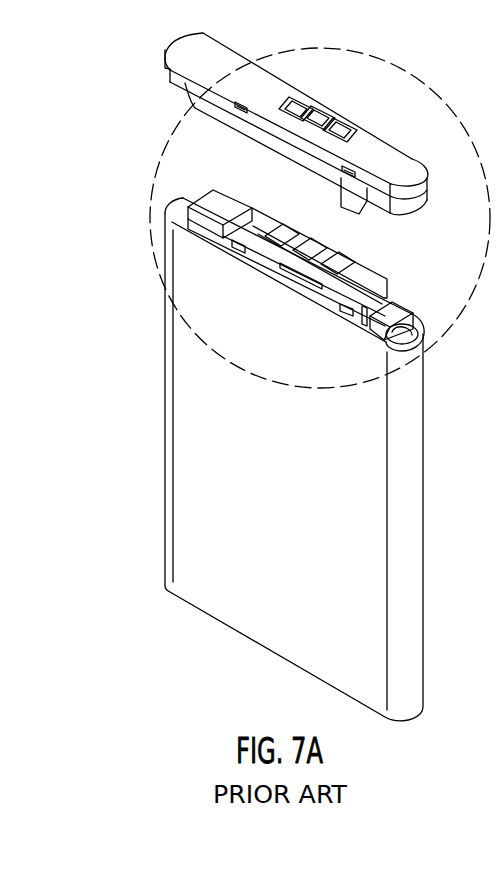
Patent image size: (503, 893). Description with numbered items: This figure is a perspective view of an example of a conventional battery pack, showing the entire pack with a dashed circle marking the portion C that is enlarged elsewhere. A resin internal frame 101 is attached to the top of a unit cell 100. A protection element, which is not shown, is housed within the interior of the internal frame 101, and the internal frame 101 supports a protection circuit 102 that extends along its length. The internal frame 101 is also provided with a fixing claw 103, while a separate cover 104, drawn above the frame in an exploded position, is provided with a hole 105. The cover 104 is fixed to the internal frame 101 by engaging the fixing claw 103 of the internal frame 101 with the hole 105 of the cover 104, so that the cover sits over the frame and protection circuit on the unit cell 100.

The portion C is at (400, 62).
The unit cell 100 is at (410, 470).
The internal frame 101 is at (210, 203).
The protection circuit 102 is at (343, 268).
The fixing claw 103 is at (344, 315).
The cover 104 is at (380, 137).
The hole 105 is at (347, 192).